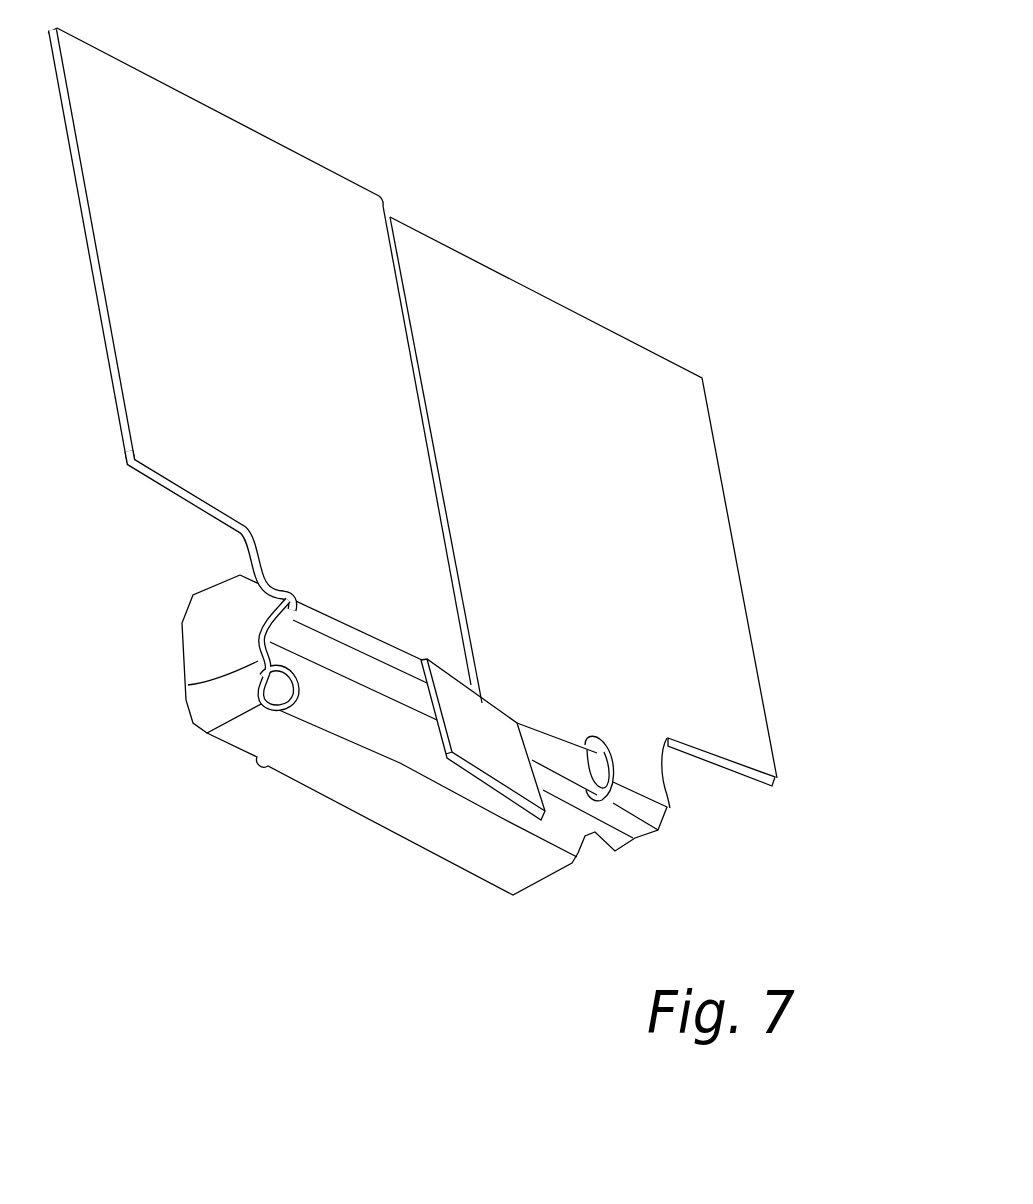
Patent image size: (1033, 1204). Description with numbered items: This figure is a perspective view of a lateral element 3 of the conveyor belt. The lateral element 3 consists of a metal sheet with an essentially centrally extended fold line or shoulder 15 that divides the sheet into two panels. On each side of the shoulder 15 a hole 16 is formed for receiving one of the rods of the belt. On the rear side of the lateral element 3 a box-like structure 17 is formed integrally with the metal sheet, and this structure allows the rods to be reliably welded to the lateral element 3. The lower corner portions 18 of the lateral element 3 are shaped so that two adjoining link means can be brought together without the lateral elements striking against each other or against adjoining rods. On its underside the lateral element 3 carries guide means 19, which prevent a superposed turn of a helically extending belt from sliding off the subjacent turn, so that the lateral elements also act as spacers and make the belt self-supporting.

The lateral element 3 is at (443, 293).
The fold line or shoulder 15 is at (438, 493).
The hole 16 is at (263, 650).
The box-like structure 17 is at (168, 738).
The lower corner portion 18 is at (157, 487).
The guide means 19 is at (436, 772).